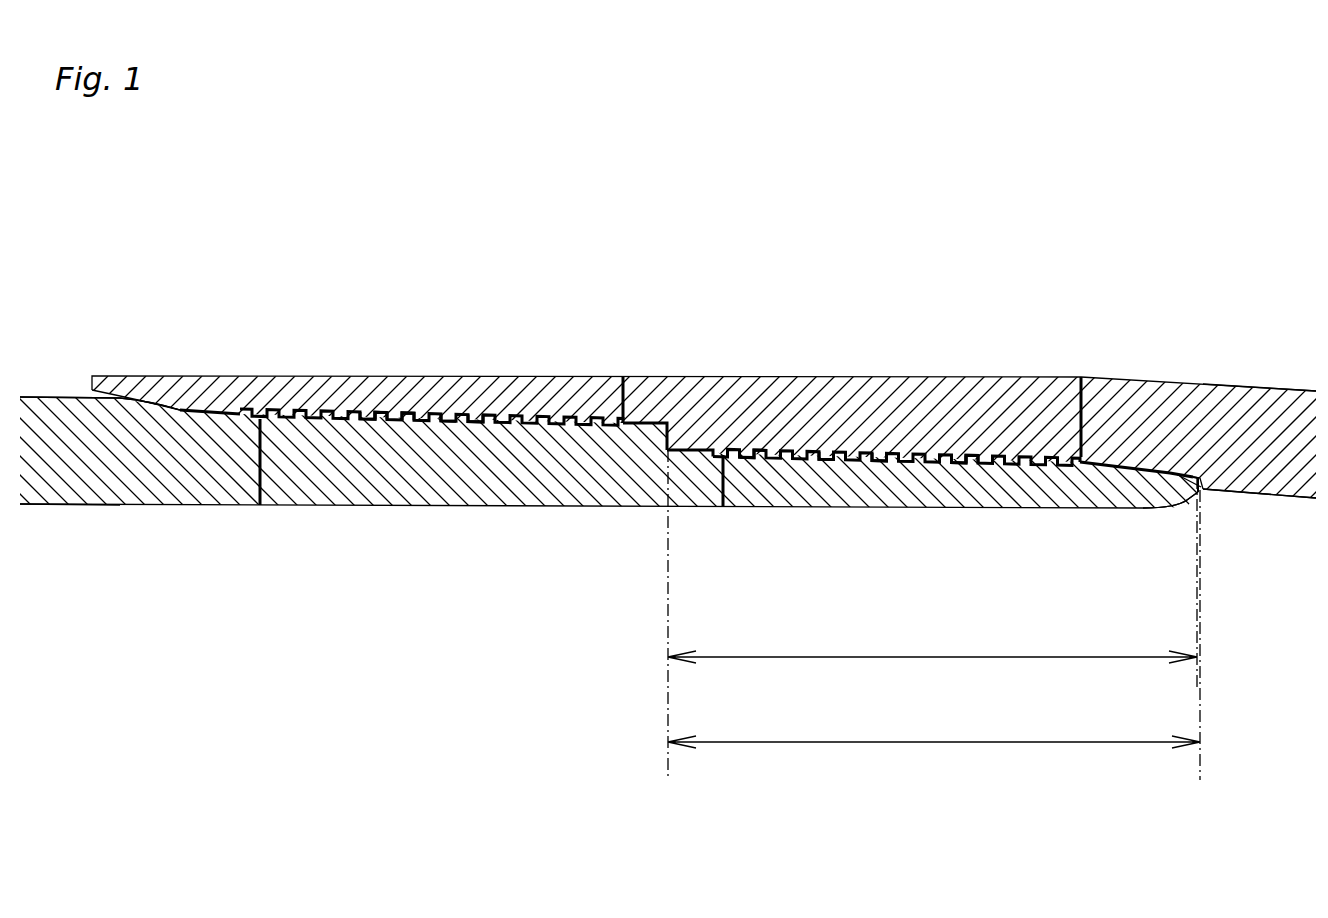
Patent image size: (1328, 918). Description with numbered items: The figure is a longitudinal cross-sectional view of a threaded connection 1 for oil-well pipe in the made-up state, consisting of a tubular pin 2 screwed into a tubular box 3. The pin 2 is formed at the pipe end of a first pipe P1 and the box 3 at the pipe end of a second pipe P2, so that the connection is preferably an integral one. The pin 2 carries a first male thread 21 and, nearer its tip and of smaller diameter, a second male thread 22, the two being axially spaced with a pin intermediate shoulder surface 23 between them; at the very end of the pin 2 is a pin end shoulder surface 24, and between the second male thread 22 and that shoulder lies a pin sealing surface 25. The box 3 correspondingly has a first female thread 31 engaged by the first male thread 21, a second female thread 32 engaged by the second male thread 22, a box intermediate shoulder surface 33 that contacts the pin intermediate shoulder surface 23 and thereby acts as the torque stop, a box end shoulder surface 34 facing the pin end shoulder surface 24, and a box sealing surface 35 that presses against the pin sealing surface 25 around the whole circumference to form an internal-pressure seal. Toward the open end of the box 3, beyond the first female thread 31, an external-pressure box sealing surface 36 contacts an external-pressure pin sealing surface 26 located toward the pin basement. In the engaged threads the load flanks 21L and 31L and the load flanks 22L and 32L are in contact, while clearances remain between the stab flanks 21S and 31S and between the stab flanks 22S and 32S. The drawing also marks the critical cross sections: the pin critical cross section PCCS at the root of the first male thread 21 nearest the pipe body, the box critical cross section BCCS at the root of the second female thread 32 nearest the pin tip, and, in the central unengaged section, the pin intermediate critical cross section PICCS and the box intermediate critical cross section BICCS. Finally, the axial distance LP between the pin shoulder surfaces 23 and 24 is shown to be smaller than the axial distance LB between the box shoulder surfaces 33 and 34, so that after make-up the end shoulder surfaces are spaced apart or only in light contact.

The threaded connection for pipe 1 is at (923, 297).
The pin 2 is at (548, 508).
The box 3 is at (305, 376).
The first male thread 21 is at (337, 420).
The load flank of first male thread 21L is at (385, 420).
The stab flank of first male thread 21S is at (410, 420).
The second male thread 22 is at (800, 458).
The load flank of second male thread 22L is at (960, 464).
The stab flank of second male thread 22S is at (972, 464).
The pin intermediate shoulder surface 23 is at (693, 450).
The pin end shoulder surface 24 is at (1201, 491).
The pin sealing surface 25 is at (1178, 465).
The external-pressure pin sealing surface 26 is at (180, 398).
The first female thread 31 is at (370, 418).
The load flank of first female thread 31L is at (482, 416).
The stab flank of first female thread 31S is at (446, 416).
The second female thread 32 is at (752, 450).
The load flank of second female thread 32L is at (876, 450).
The stab flank of second female thread 32S is at (826, 450).
The box intermediate shoulder surface 33 is at (651, 422).
The box end shoulder surface 34 is at (1187, 470).
The box sealing surface 35 is at (1125, 462).
The external-pressure box sealing surface 36 is at (125, 397).
The first pipe P1 is at (55, 393).
The second pipe P2 is at (1283, 389).
The pin critical cross section PCCS is at (264, 470).
The box intermediate critical cross section BICCS is at (623, 378).
The pin intermediate critical cross section PICCS is at (724, 490).
The box critical cross section BCCS is at (1053, 377).
The axial distance between pin intermediate shoulder surface and pin end shoulder su LP is at (934, 615).
The axial distance between box intermediate shoulder surface and box end shoulder su LB is at (934, 756).